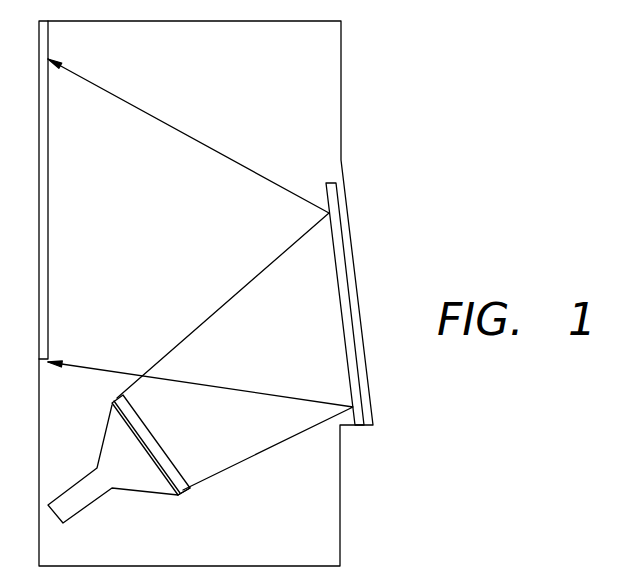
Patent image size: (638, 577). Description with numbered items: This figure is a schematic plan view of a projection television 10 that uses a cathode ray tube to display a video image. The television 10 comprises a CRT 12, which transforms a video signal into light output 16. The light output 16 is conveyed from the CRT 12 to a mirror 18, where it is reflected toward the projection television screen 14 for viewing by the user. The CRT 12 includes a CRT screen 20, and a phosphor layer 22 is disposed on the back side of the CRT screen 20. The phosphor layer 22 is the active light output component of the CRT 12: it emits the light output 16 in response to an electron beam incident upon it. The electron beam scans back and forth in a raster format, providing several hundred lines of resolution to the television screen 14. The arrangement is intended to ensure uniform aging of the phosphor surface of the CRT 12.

The television 10 is at (368, 113).
The CRT 12 is at (143, 495).
The projection television screen 14 is at (48, 173).
The light output 16 is at (275, 447).
The mirror 18 is at (344, 239).
The CRT screen 20 is at (188, 495).
The phosphor layer 22 is at (112, 403).